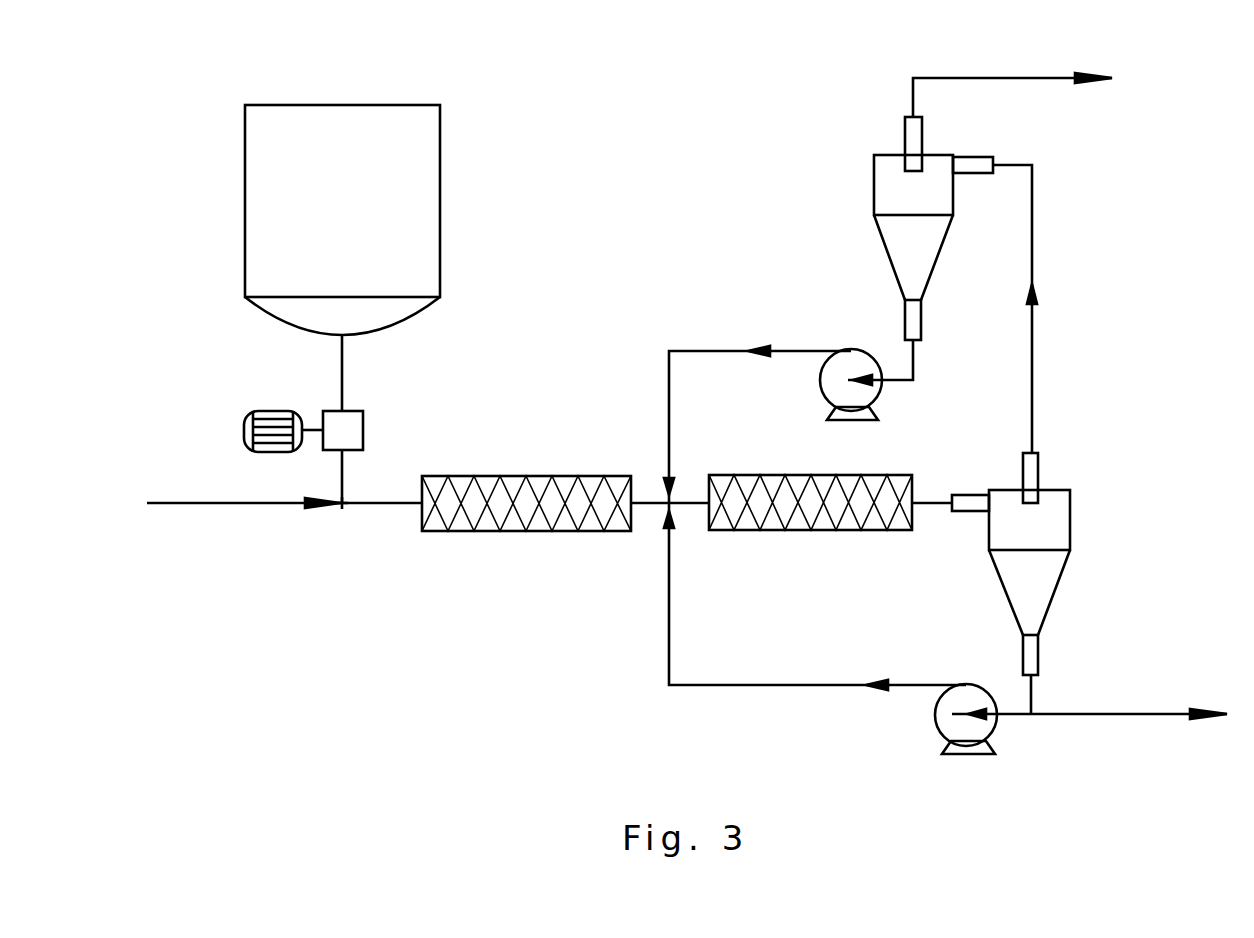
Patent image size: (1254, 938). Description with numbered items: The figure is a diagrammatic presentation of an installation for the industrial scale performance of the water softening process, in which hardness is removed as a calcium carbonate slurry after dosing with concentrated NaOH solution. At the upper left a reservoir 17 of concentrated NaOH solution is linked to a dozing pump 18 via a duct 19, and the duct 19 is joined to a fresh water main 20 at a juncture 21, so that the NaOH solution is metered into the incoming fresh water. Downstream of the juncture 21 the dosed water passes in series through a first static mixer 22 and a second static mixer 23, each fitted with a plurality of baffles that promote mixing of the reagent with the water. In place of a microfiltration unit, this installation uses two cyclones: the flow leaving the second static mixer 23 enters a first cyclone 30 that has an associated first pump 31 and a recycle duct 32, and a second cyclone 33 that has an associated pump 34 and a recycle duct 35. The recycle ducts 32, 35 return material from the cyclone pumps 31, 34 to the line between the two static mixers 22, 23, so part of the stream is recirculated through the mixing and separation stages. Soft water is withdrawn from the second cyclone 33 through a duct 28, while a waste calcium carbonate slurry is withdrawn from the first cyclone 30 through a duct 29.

The reservoir 17 is at (423, 197).
The dozing pump 18 is at (313, 428).
The duct 19 is at (342, 383).
The fresh water main 20 is at (187, 503).
The juncture 21 is at (347, 507).
The first static mixer 22 is at (523, 532).
The second static mixer 23 is at (810, 530).
The duct 28 is at (973, 78).
The duct 29 is at (1107, 714).
The first cyclone 30 is at (1057, 519).
The first pump 31 is at (953, 715).
The recycle duct 32 is at (669, 620).
The second cyclone 33 is at (888, 177).
The pump 34 is at (870, 392).
The recycle duct 35 is at (669, 427).